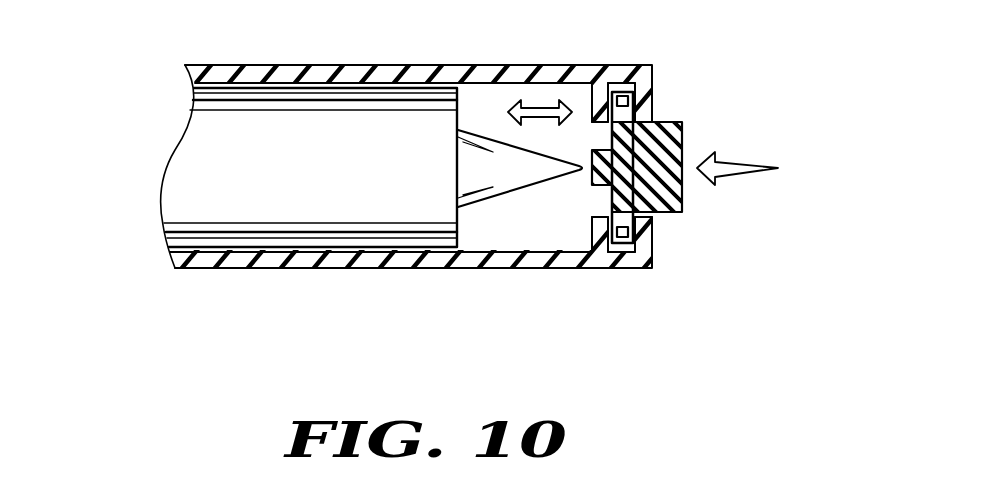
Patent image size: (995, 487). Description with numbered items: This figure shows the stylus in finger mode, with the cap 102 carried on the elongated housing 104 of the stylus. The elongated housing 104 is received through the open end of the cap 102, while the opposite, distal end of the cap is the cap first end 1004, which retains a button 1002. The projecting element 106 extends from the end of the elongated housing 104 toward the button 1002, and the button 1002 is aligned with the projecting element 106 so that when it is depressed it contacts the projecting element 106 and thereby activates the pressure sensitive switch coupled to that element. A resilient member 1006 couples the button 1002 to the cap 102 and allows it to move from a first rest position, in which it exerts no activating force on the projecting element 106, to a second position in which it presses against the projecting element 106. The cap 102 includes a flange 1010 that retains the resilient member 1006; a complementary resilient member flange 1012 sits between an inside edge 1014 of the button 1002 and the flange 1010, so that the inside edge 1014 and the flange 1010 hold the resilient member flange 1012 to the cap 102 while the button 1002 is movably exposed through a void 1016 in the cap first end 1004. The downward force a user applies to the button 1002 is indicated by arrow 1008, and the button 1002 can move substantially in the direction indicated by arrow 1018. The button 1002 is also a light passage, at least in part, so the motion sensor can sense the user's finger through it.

The cap 102 is at (238, 268).
The elongated housing 104 is at (168, 173).
The projecting element 106 is at (473, 148).
The button 1002 is at (673, 125).
The cap first end 1004 is at (653, 241).
The resilient member 1006 is at (603, 212).
The arrow 1008 is at (750, 173).
The flange 1010 is at (592, 105).
The resilient member flange 1012 is at (620, 103).
The inside edge 1014 is at (632, 245).
The void 1016 is at (600, 202).
The arrow 1018 is at (527, 100).